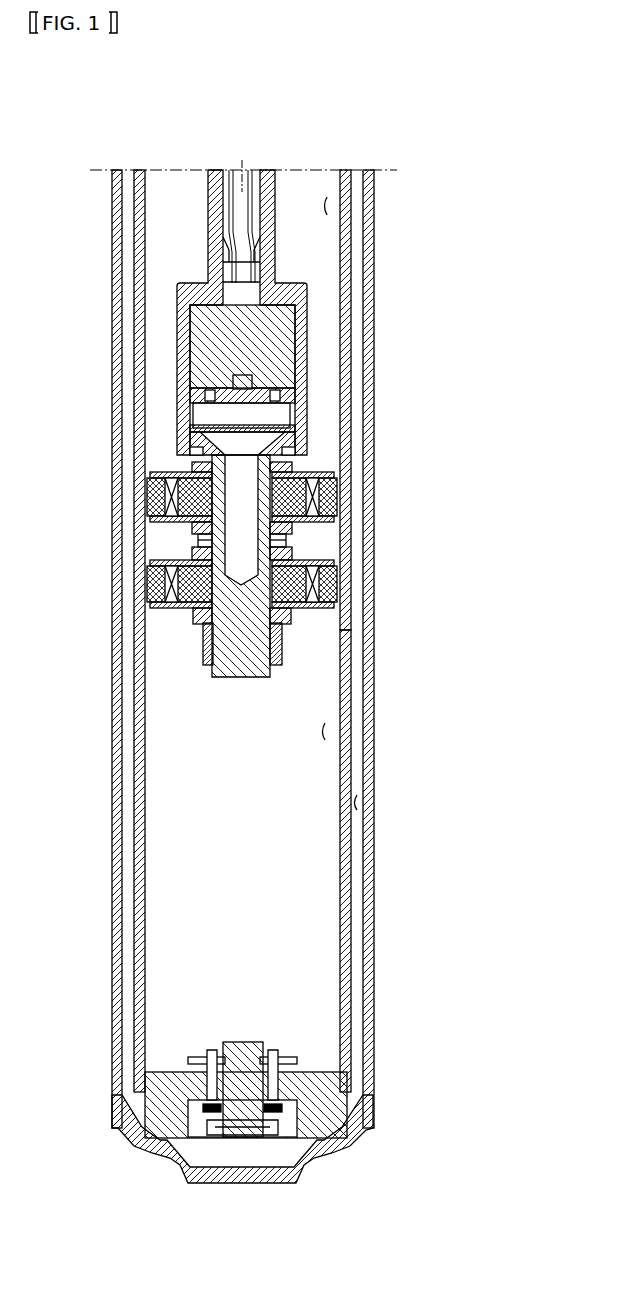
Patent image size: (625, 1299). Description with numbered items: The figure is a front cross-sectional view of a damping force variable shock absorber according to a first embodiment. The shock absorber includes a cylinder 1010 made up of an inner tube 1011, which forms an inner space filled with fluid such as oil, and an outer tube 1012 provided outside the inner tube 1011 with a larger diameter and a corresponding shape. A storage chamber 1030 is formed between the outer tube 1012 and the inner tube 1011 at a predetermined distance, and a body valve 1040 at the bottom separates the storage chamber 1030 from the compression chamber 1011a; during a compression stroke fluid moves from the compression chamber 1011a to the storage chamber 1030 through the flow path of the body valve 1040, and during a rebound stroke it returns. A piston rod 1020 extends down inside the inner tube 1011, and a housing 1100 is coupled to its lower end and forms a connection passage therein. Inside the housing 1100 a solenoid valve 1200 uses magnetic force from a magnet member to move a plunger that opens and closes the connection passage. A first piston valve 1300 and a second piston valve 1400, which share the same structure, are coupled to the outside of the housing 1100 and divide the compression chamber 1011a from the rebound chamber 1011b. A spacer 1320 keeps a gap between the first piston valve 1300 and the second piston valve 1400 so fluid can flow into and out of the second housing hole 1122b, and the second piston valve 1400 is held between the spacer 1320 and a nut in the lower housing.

The cylinder 1010 is at (299, 649).
The inner tube 1011 is at (305, 631).
The compression chamber 1011a is at (327, 731).
The rebound chamber 1011b is at (327, 207).
The outer tube 1012 is at (367, 324).
The piston rod 1020 is at (301, 161).
The storage chamber 1030 is at (357, 802).
The body valve 1040 is at (331, 1083).
The housing 1100 is at (168, 295).
The solenoid valve 1200 is at (172, 330).
The first piston valve 1300 is at (144, 500).
The second piston valve 1400 is at (144, 585).
The second housing hole 1122b is at (293, 530).
The spacer 1320 is at (292, 543).